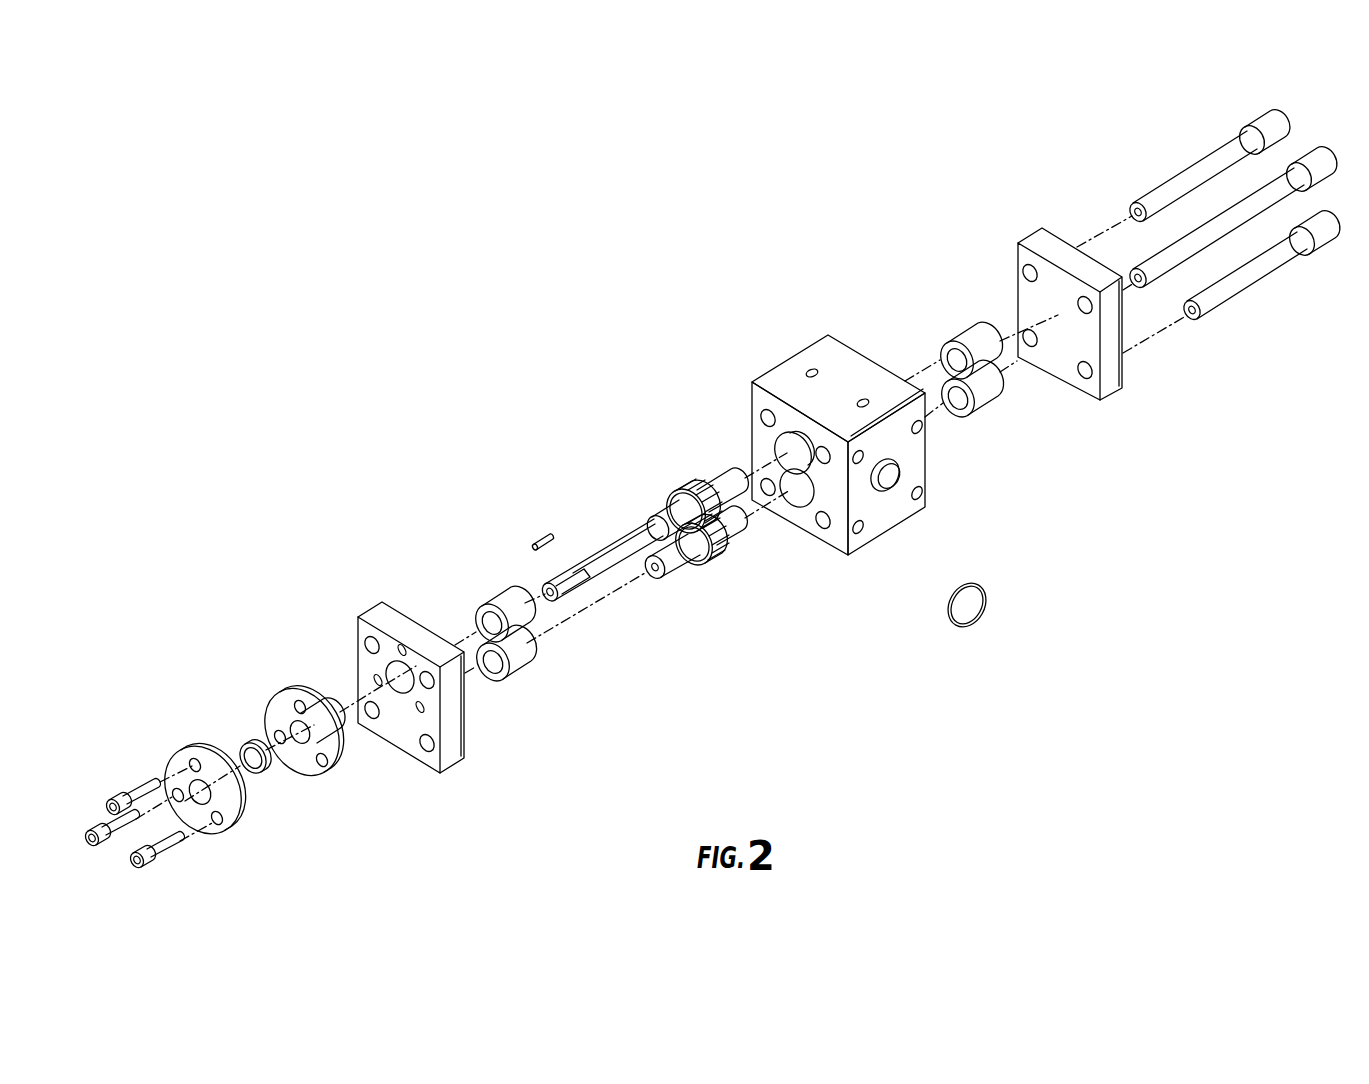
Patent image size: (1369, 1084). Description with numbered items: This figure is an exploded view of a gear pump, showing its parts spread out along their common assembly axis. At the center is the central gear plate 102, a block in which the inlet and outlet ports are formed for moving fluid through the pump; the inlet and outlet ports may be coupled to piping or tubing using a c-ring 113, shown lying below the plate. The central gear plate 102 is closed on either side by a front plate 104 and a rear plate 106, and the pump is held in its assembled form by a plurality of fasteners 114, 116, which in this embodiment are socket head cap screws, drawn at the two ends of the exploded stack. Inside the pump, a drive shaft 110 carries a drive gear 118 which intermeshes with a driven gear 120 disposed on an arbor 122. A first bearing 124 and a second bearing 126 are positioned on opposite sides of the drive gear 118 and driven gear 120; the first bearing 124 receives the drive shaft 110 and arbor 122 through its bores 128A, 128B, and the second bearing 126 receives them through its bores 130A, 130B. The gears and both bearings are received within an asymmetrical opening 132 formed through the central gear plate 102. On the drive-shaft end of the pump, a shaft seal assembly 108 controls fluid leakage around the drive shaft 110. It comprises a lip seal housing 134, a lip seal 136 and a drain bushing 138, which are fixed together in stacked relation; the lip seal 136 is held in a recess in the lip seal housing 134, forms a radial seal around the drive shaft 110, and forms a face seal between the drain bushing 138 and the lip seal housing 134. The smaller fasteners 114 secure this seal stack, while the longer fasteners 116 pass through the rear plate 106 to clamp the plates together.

The central gear plate 102 is at (787, 358).
The front plate 104 is at (462, 762).
The rear plate 106 is at (1033, 230).
The shaft seal assembly 108 is at (229, 739).
The drive shaft 110 is at (628, 536).
The c-ring 113 is at (985, 608).
The fasteners 114 is at (217, 823).
The fasteners 116 is at (1268, 260).
The drive gear 118 is at (690, 487).
The driven gear 120 is at (717, 555).
The arbor 122 is at (677, 567).
The first bearing 124 is at (556, 642).
The second bearing 126 is at (964, 347).
The bore 128A is at (507, 660).
The bore 128B is at (580, 720).
The bore 130A is at (950, 347).
The bore 130B is at (923, 288).
The asymmetrical opening 132 is at (792, 458).
The lip seal housing 134 is at (227, 830).
The lip seal 136 is at (263, 775).
The drain bushing 138 is at (338, 767).